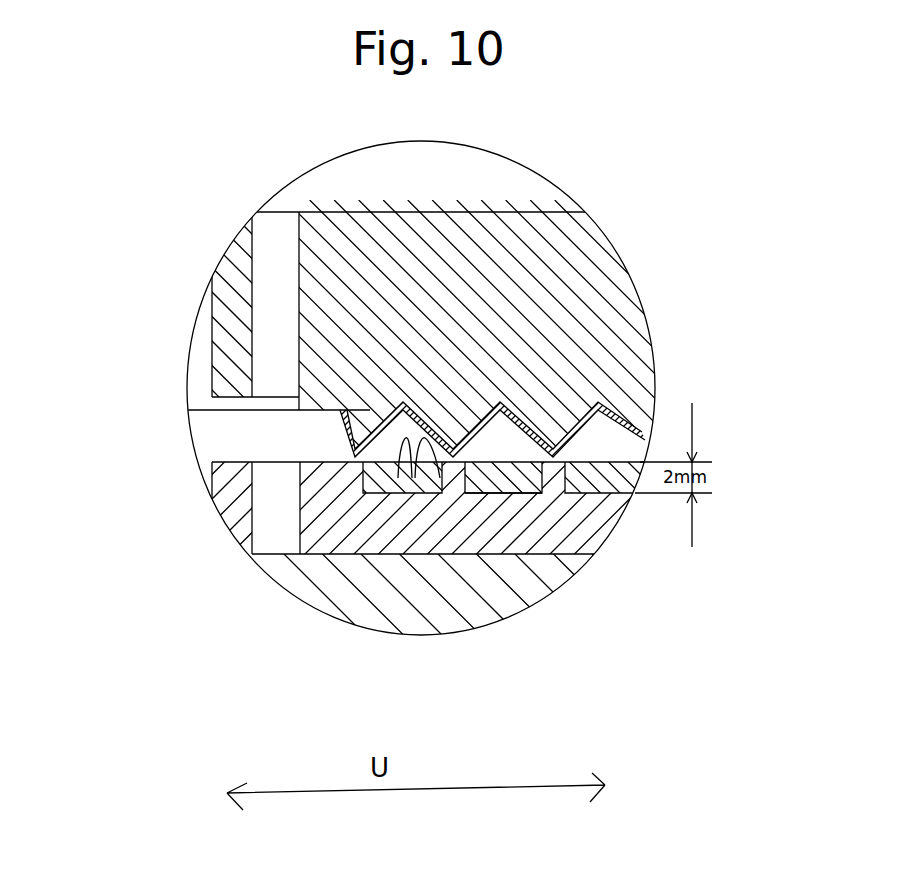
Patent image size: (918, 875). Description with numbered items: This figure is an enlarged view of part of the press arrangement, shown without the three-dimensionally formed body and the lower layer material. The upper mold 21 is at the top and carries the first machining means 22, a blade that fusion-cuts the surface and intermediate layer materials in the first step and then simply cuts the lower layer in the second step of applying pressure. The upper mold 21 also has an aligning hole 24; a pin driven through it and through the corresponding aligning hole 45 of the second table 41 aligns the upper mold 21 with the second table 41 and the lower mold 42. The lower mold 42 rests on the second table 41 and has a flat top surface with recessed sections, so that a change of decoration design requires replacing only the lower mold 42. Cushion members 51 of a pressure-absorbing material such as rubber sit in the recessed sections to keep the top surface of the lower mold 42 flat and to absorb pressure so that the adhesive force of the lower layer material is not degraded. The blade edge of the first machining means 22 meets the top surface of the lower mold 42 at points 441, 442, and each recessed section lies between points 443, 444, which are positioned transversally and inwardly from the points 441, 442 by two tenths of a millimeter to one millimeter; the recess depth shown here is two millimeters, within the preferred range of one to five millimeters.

The upper mold 21 is at (580, 287).
The first machining means 22 is at (612, 432).
The aligning hole 24 is at (281, 250).
The second table 41 is at (550, 572).
The lower mold 42 is at (583, 527).
The aligning hole 45 is at (278, 505).
The cushion member 51 is at (615, 495).
The point 441 is at (333, 405).
The point 442 is at (520, 490).
The point 443 is at (398, 478).
The point 444 is at (416, 478).